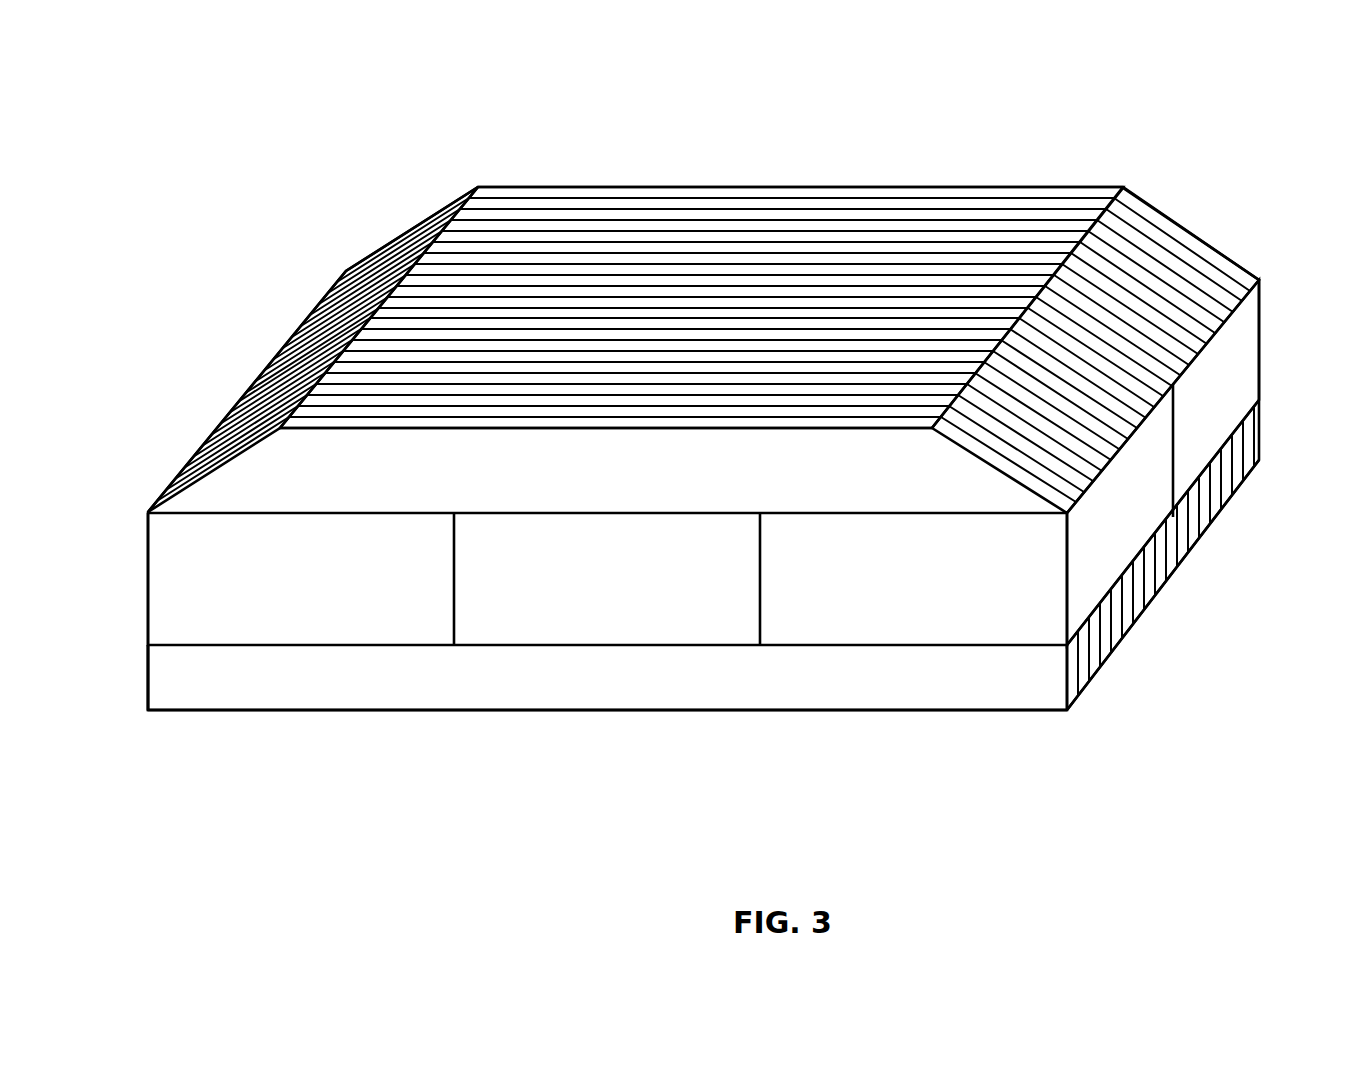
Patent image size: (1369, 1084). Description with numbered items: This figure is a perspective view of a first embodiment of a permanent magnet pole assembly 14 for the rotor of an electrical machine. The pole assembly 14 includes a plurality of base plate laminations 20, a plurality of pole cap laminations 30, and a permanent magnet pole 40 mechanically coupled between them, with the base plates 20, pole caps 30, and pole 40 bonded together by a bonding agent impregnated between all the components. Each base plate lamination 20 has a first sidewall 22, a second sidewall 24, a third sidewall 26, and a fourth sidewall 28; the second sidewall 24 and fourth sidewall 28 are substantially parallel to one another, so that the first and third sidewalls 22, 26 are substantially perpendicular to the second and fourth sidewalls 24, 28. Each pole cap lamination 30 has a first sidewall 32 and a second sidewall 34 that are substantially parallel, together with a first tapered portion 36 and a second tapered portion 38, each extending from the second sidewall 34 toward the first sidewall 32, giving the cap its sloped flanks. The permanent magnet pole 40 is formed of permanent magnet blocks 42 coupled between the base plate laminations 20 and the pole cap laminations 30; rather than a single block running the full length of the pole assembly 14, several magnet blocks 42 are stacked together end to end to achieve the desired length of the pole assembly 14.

The permanent magnet pole assembly 14 is at (375, 142).
The base plate lamination 20 is at (838, 704).
The first sidewall 22 is at (167, 643).
The second sidewall 24 is at (1063, 698).
The third sidewall 26 is at (222, 712).
The fourth sidewall 28 is at (145, 672).
The pole cap lamination 30 is at (677, 229).
The first sidewall 32 is at (1015, 517).
The second sidewall 34 is at (310, 430).
The first tapered portion 36 is at (235, 468).
The second tapered portion 38 is at (987, 470).
The permanent magnet pole 40 is at (1278, 357).
The permanent magnet blocks 42 is at (407, 612).